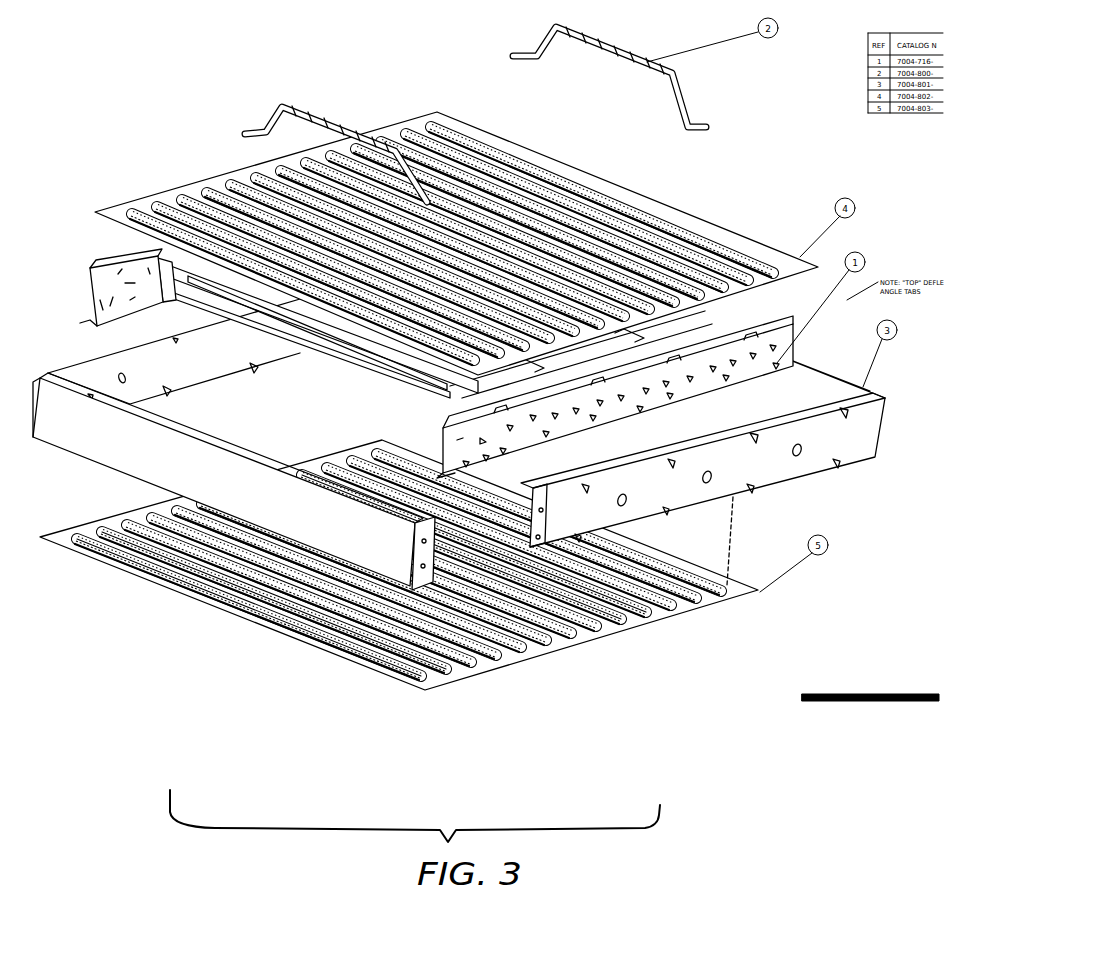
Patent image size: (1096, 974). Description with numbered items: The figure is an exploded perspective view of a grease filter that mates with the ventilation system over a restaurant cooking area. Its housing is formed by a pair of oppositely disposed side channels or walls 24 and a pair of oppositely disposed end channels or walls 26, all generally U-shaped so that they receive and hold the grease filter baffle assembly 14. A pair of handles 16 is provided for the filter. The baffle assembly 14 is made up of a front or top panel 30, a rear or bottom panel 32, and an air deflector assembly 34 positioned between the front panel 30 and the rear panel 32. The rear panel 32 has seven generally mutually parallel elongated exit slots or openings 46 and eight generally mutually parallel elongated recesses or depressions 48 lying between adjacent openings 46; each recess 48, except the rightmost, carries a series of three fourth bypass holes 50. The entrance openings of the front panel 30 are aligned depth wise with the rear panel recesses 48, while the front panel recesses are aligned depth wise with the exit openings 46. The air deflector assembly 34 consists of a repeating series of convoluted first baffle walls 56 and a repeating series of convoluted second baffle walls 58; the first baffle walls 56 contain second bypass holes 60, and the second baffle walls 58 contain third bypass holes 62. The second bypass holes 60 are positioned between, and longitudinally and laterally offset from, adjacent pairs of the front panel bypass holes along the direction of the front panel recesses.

The grease filter baffle assembly 14 is at (490, 393).
The handles 16 is at (683, 87).
The side channels or walls 24 is at (873, 436).
The end channels or walls 26 is at (115, 448).
The front or top panel 30 is at (693, 213).
The rear or bottom panel 32 is at (675, 615).
The air deflector assembly 34 is at (748, 320).
The exit slots or openings 46 is at (618, 615).
The elongated recesses or depressions 48 is at (597, 627).
The fourth bypass holes 50 is at (383, 630).
The first baffle walls 56 is at (158, 272).
The second baffle walls 58 is at (173, 303).
The second bypass holes 60 is at (243, 300).
The third bypass holes 62 is at (207, 308).